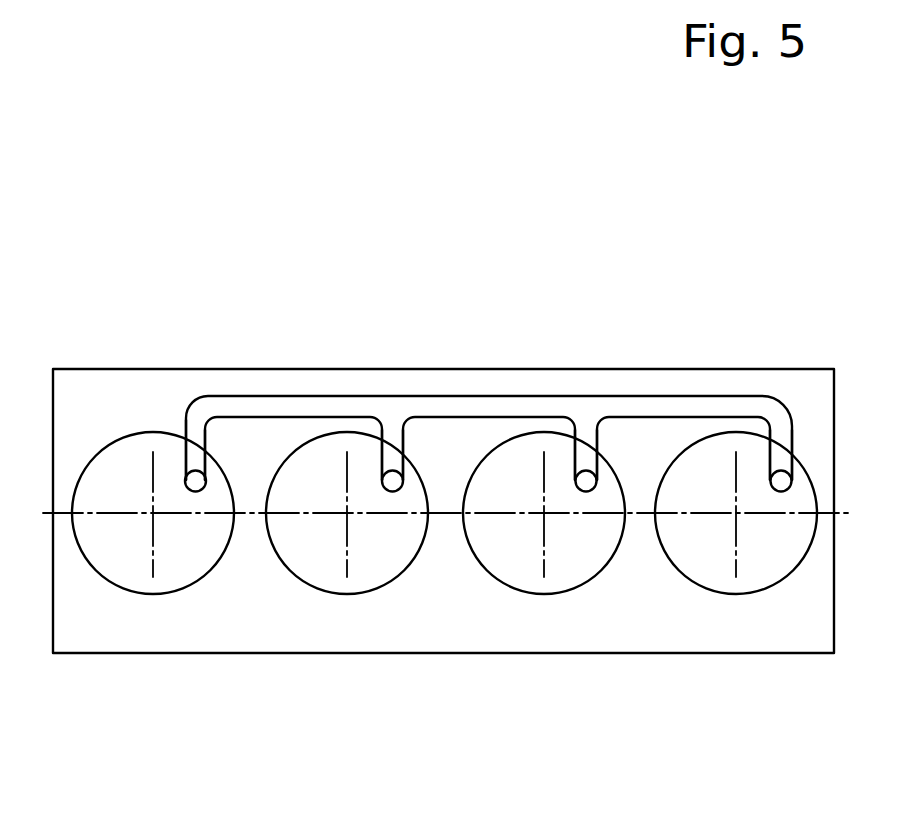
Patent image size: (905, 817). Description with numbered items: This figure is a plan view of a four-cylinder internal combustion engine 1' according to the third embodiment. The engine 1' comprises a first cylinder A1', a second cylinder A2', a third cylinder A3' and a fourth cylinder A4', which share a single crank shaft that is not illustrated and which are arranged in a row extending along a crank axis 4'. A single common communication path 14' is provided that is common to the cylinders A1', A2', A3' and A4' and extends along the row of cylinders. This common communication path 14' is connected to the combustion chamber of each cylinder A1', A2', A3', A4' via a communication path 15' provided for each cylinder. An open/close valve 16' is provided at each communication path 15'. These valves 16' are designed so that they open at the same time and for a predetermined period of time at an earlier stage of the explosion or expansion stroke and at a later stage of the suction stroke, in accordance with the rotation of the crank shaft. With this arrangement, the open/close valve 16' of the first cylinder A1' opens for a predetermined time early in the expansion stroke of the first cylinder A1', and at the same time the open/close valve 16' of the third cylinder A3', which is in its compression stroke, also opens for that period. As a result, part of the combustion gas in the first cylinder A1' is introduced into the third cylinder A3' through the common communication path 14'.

The four-cylinder internal combustion engine 1' is at (446, 437).
The crank axis 4' is at (422, 581).
The common communication path 14' is at (489, 385).
The communication path 15' is at (498, 391).
The open/close valve 16' is at (411, 373).
The first cylinder A1' is at (736, 572).
The second cylinder A2' is at (544, 581).
The third cylinder A3' is at (347, 580).
The fourth cylinder A4' is at (156, 581).